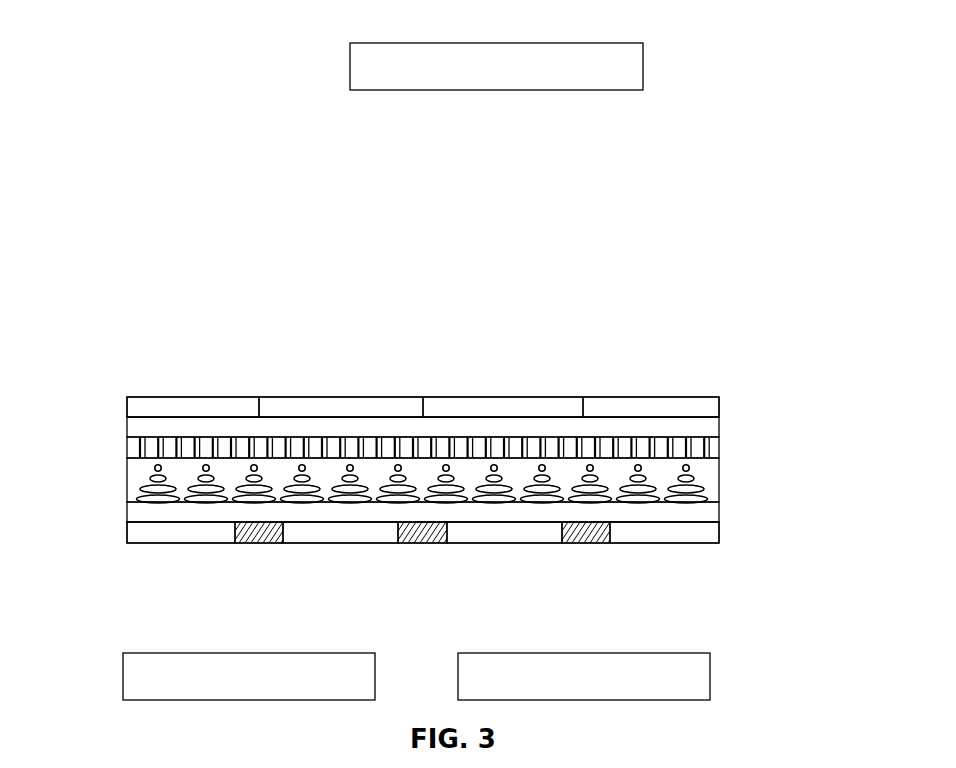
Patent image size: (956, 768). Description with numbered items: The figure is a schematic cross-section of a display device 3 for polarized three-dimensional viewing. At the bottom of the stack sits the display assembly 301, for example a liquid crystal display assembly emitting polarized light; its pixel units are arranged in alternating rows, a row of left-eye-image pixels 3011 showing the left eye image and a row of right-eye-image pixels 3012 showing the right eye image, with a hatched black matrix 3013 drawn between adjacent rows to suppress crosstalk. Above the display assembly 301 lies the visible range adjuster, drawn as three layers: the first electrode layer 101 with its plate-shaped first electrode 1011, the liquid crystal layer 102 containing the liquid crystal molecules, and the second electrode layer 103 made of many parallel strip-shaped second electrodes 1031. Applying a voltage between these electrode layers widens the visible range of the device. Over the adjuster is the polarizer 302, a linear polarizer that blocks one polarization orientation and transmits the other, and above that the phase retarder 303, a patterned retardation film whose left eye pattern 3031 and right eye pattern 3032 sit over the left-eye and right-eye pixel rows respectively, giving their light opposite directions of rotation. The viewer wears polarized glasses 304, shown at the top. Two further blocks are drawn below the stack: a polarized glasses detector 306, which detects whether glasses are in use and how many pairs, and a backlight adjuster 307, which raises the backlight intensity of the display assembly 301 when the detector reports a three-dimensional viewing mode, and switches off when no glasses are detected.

The display device 3 is at (255, 52).
The polarized glasses 304 is at (496, 66).
The phase retarder 303 is at (452, 383).
The left eye pattern 3031 is at (193, 408).
The right eye pattern 3032 is at (345, 410).
The polarizer 302 is at (743, 431).
The second electrode layer 103 is at (424, 449).
The second electrode 1031 is at (135, 448).
The liquid crystal layer 102 is at (743, 480).
The first electrode layer 101 is at (424, 515).
The first electrode 1011 is at (148, 515).
The display assembly 301 is at (455, 568).
The row of left-eye-image pixels 3011 is at (182, 532).
The row of right-eye-image pixels 3012 is at (343, 537).
The black matrix 3013 is at (247, 535).
The polarized glasses detector 306 is at (249, 676).
The backlight adjuster 307 is at (584, 676).